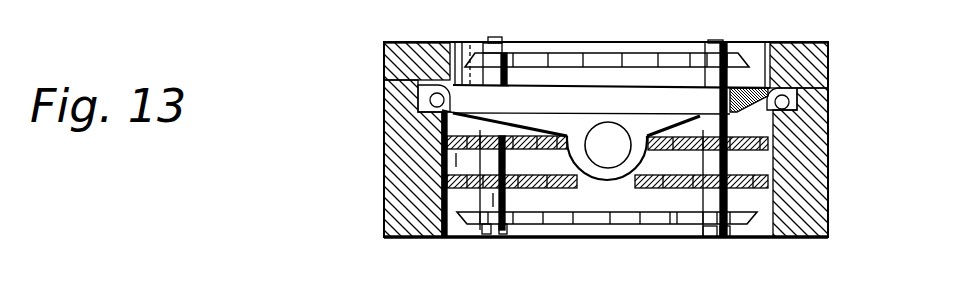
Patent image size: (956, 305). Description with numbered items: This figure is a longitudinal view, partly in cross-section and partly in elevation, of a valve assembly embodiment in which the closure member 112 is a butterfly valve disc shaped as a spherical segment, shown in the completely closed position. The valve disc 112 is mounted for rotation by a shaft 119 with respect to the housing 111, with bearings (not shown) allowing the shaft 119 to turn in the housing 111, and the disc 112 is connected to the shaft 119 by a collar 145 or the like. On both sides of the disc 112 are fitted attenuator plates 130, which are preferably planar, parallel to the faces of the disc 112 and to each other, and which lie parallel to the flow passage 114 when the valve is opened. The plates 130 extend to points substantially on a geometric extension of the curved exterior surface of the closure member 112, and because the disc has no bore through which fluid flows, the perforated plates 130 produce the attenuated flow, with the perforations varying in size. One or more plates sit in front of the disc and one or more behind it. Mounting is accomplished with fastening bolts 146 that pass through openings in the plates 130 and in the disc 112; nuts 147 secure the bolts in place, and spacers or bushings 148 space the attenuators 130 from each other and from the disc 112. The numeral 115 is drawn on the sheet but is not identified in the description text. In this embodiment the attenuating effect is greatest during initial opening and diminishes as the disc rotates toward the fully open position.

The housing 111 is at (384, 177).
The closure member 112 is at (800, 87).
The flow passage 114 is at (768, 62).
The left pivot bearing 115 is at (418, 84).
The shaft 119 is at (607, 140).
The attenuator plates 130 is at (643, 56).
The collar 145 is at (662, 108).
The fastening bolts 146 is at (730, 237).
The nuts 147 is at (509, 42).
The spacers or bushings 148 is at (488, 162).